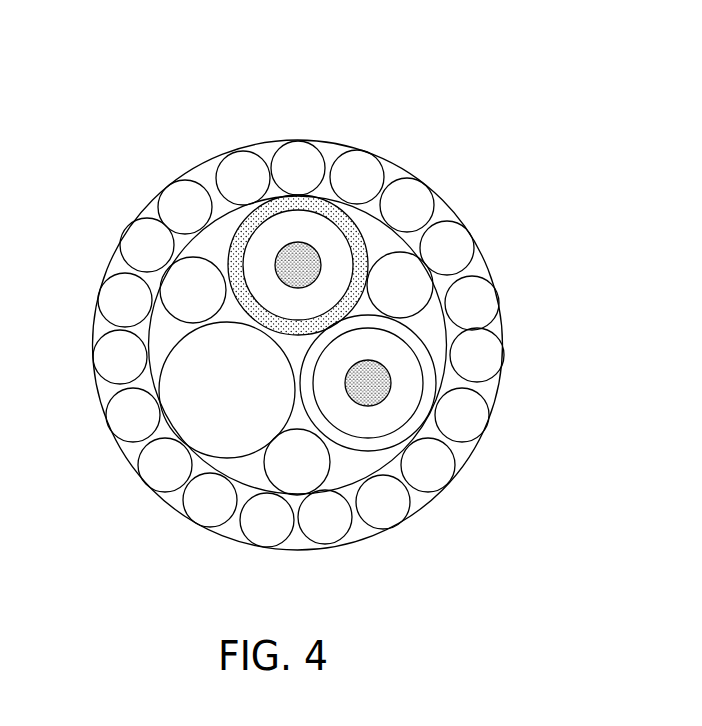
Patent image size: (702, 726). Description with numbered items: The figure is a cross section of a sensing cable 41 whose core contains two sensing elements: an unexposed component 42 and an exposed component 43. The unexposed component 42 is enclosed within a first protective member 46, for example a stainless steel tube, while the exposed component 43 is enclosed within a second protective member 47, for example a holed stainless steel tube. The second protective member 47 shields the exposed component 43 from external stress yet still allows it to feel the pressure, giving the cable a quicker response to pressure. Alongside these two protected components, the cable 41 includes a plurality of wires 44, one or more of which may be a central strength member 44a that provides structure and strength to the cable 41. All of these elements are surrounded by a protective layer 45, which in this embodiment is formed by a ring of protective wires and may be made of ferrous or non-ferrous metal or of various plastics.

The sensing cable 41 is at (494, 78).
The unexposed component 42 is at (372, 407).
The exposed component 43 is at (302, 243).
The wires 44 is at (192, 282).
The central strength member 44a is at (165, 388).
The protective layer 45 is at (475, 350).
The first protective member 46 is at (362, 453).
The second protective member 47 is at (360, 235).